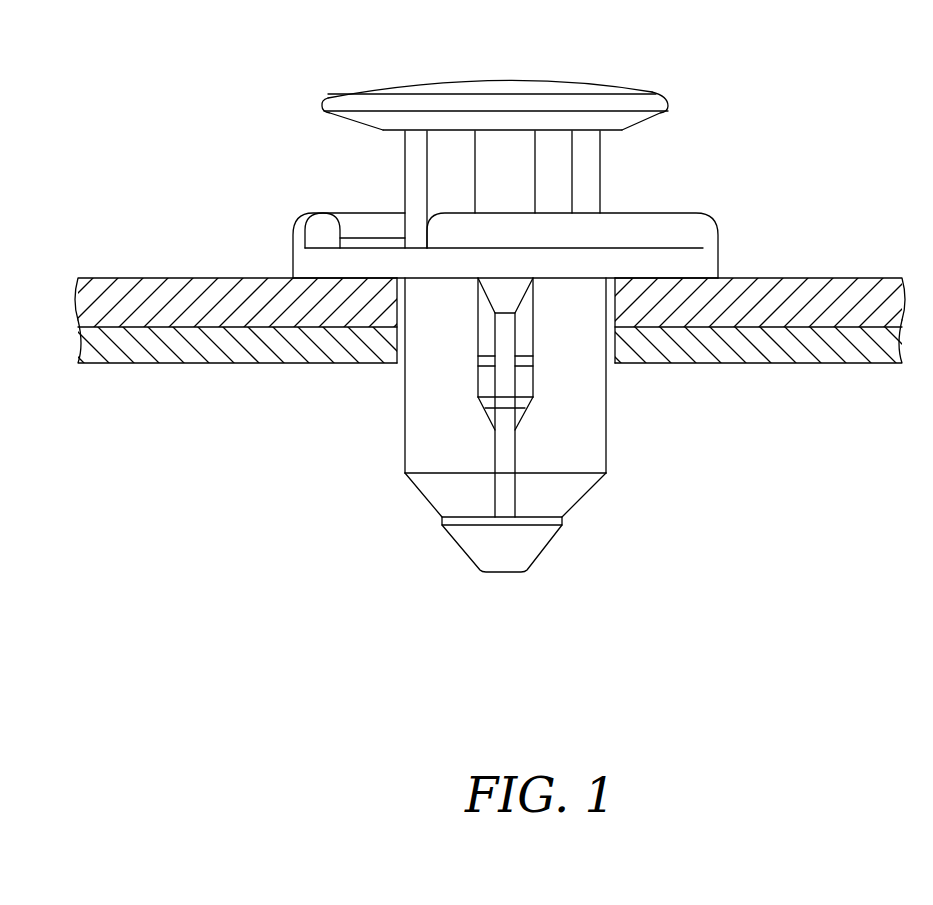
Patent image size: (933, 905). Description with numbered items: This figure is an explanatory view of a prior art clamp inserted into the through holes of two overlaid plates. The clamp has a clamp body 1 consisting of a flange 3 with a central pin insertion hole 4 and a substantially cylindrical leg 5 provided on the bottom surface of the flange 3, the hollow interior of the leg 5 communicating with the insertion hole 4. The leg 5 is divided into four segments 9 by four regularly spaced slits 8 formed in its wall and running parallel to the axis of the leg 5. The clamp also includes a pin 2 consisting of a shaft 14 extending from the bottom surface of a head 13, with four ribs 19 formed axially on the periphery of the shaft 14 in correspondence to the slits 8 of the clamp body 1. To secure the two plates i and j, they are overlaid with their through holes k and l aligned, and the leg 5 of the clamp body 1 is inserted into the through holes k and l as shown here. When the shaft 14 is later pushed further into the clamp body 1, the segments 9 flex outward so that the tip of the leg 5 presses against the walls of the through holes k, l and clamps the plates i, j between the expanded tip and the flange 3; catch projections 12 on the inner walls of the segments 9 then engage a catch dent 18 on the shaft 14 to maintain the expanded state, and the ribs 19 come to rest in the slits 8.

The clamp body 1 is at (388, 492).
The pin 2 is at (660, 68).
The flange 3 is at (697, 227).
The pin insertion hole 4 is at (530, 350).
The leg 5 is at (607, 427).
The slits 8 is at (533, 385).
The segments 9 is at (573, 450).
The catch projections 12 is at (563, 498).
The head 13 is at (459, 93).
The shaft 14 is at (557, 140).
The catch dent 18 is at (487, 392).
The ribs 19 is at (505, 140).
The plate i is at (838, 285).
The plate j is at (851, 355).
The through hole k is at (410, 305).
The through hole l is at (397, 340).